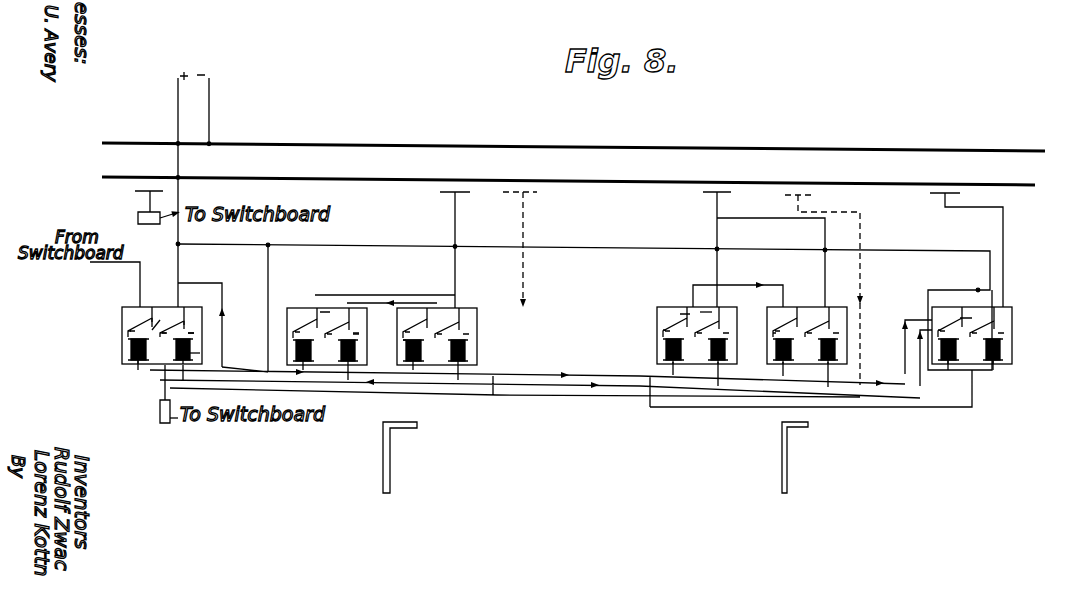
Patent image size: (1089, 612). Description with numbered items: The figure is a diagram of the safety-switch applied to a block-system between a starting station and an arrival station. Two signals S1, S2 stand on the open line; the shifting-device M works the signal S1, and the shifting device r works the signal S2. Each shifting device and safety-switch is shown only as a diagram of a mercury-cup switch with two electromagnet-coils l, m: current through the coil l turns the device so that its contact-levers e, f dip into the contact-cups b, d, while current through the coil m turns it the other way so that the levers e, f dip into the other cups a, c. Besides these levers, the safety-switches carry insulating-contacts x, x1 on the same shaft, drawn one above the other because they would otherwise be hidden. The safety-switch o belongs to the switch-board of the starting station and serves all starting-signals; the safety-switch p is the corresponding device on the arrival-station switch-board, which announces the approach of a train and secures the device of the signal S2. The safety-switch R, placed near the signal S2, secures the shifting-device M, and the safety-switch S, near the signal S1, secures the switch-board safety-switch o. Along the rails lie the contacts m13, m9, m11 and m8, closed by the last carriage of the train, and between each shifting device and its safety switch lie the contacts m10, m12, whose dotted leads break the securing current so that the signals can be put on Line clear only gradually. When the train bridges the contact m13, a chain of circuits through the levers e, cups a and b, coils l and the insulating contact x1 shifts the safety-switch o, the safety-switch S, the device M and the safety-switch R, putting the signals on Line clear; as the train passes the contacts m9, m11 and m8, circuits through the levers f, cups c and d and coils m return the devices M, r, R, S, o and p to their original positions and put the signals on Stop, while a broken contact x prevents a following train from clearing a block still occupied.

The rail-switch contact m13 is at (155, 190).
The rail-switch contact m9 is at (455, 235).
The rail-switch contact m10 is at (521, 235).
The rail-switch contact m11 is at (764, 235).
The rail-switch contact m12 is at (824, 274).
The rail-switch contact m8 is at (966, 235).
The safety-switch for starting-signals o is at (125, 308).
The safety-switch S is at (300, 308).
The shifting-device M is at (412, 308).
The safety-switch R is at (675, 306).
The shifting-device for the signal S2 r is at (830, 320).
The safety-switch on arrival switch-board p is at (1010, 318).
The insulating-contact x is at (325, 312).
The insulating-contact x1 is at (706, 312).
The contact-cup a is at (128, 331).
The contact-cup b is at (486, 334).
The contact-cup c is at (708, 358).
The contact-cup d is at (194, 333).
The contact-lever e is at (152, 318).
The contact-lever f is at (186, 321).
The electromagnet-coil l is at (136, 360).
The electromagnet-coil m is at (726, 388).
The signal S1 is at (389, 457).
The signal S2 is at (796, 457).